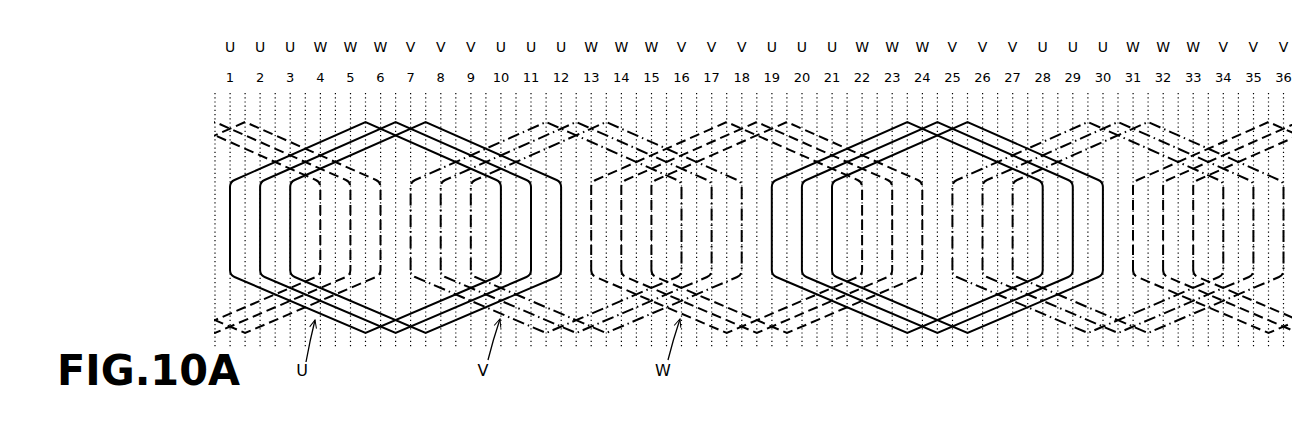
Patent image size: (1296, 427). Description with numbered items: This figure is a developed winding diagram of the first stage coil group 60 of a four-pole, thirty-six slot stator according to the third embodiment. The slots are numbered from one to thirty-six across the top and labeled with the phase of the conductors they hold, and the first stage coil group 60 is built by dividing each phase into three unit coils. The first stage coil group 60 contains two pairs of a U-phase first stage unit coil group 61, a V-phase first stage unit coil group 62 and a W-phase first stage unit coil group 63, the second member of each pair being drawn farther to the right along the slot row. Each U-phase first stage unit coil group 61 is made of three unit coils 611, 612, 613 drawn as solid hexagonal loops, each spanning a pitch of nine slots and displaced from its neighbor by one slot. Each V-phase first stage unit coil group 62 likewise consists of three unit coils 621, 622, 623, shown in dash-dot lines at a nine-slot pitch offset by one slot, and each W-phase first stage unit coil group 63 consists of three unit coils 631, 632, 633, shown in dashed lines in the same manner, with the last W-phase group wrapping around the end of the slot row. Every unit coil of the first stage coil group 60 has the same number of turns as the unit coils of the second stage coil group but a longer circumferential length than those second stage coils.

The first stage coil group 60 is at (208, 184).
The U-phase first stage unit coil group 61 is at (438, 383).
The V-phase first stage unit coil group 62 is at (500, 383).
The W-phase first stage unit coil group 63 is at (797, 383).
The unit coil 611 is at (346, 329).
The unit coil 612 is at (388, 329).
The unit coil 613 is at (421, 330).
The unit coil 621 is at (531, 327).
The unit coil 622 is at (571, 330).
The unit coil 623 is at (604, 330).
The unit coil 631 is at (708, 326).
The unit coil 632 is at (748, 329).
The unit coil 633 is at (783, 330).